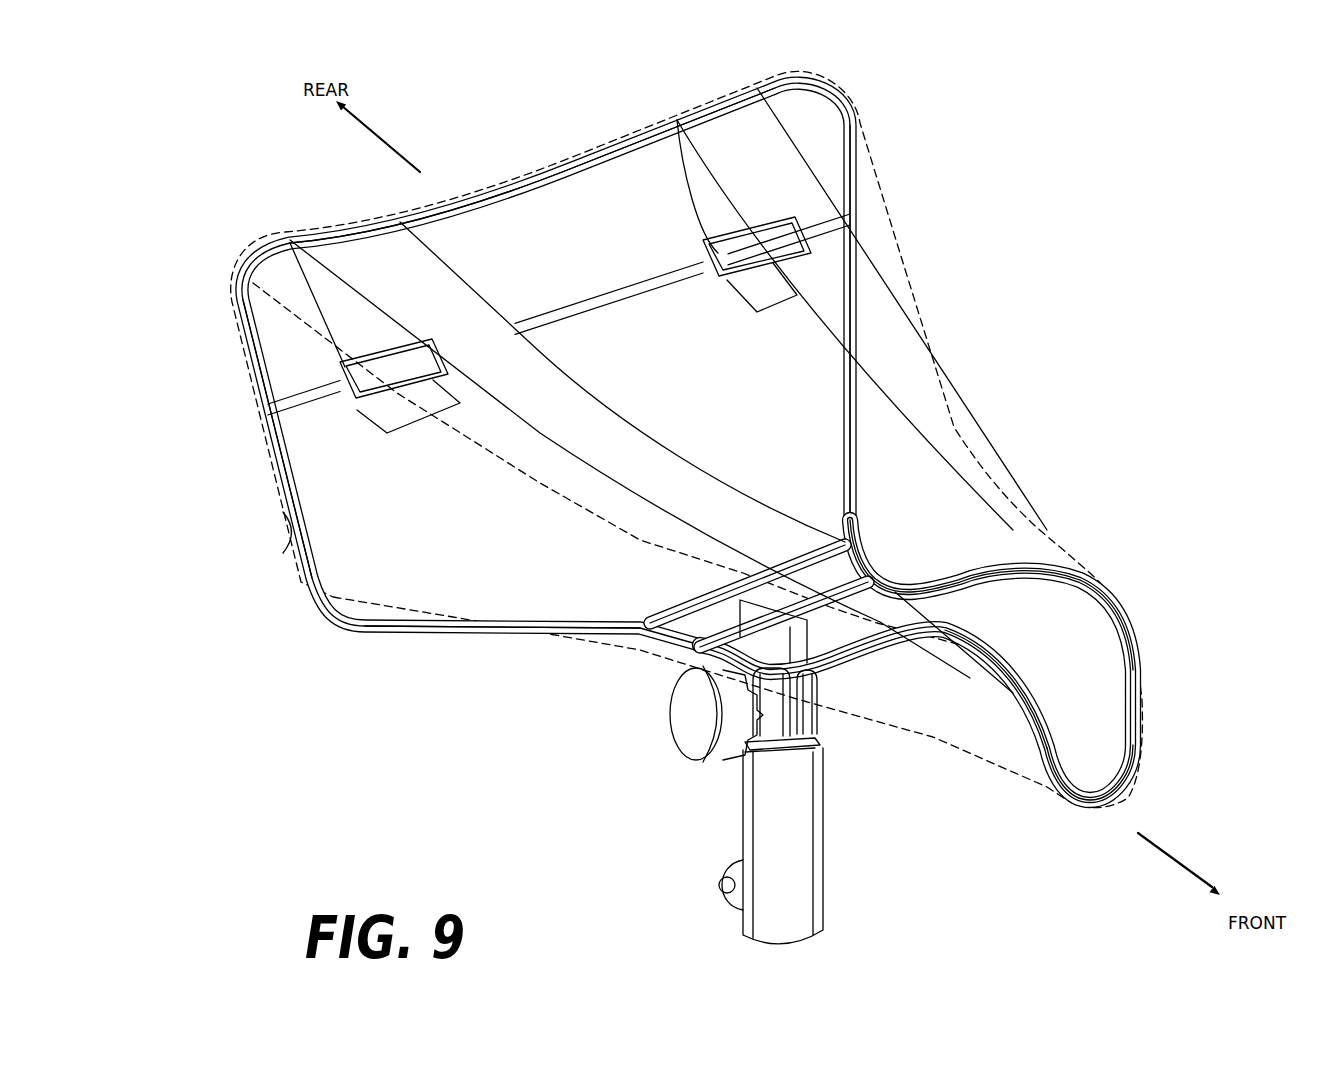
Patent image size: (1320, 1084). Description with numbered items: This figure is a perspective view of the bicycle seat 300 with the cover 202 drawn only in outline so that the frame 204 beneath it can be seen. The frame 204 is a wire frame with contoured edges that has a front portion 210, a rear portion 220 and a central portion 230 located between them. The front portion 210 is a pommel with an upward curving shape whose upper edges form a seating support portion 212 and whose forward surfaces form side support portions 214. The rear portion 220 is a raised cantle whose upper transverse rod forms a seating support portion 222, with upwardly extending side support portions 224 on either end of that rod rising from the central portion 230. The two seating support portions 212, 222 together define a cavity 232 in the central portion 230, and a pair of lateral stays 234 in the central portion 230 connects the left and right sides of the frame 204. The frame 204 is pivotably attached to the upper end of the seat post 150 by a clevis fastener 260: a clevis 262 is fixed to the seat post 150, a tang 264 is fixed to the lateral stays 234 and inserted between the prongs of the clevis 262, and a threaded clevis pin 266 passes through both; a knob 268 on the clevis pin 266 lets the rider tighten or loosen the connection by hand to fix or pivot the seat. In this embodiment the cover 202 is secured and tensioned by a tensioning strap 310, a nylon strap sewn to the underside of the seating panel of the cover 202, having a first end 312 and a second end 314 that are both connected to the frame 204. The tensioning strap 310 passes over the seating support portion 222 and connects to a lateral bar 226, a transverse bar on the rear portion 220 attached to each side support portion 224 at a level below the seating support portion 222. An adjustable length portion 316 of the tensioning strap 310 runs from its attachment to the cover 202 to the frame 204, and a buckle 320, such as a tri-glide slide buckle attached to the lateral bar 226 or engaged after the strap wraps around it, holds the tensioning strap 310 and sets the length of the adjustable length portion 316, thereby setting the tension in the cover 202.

The seat post 150 is at (800, 918).
The cover 202 is at (940, 298).
The frame 204 is at (440, 630).
The front portion 210 is at (1115, 552).
The seating support portion 212 is at (1112, 618).
The side support portions 214 is at (1126, 750).
The rear portion 220 is at (200, 396).
The seating support portion 222 is at (643, 133).
The side support portions 224 is at (268, 437).
The lateral bar 226 is at (602, 300).
The central portion 230 is at (522, 698).
The cavity 232 is at (955, 492).
The lateral stays 234 is at (860, 587).
The clevis fastener 260 is at (888, 732).
The clevis 262 is at (783, 747).
The tang 264 is at (808, 717).
The clevis pin 266 is at (757, 710).
The knob 268 is at (692, 742).
The bicycle seat 300 is at (522, 115).
The tensioning strap 310 is at (690, 500).
The first end 312 is at (378, 408).
The second end 314 is at (773, 281).
The adjustable length portion 316 is at (336, 297).
The buckle 320 is at (340, 372).